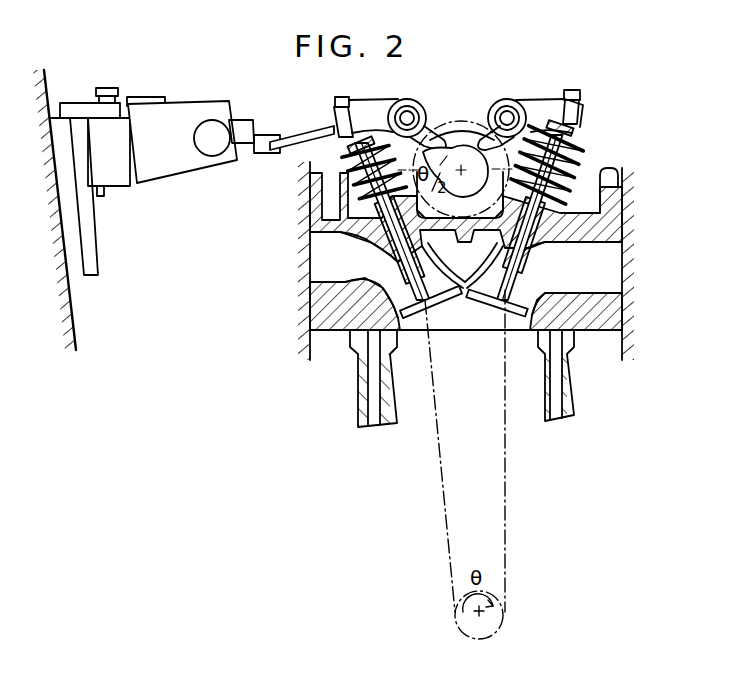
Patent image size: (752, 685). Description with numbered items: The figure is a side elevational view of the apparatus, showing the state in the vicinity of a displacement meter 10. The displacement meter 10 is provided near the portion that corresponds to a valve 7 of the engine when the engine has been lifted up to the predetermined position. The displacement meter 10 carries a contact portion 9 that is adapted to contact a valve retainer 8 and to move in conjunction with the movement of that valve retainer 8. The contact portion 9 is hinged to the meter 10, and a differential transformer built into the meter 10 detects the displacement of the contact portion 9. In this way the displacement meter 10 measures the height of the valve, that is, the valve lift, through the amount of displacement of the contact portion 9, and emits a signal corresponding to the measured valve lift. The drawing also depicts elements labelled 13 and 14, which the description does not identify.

The valve 7 is at (346, 262).
The valve retainer 8 is at (300, 166).
The contact portion 9 is at (284, 130).
The displacement meter 10 is at (212, 128).
The camshaft 13 is at (497, 168).
The rocker arm 14 is at (437, 126).